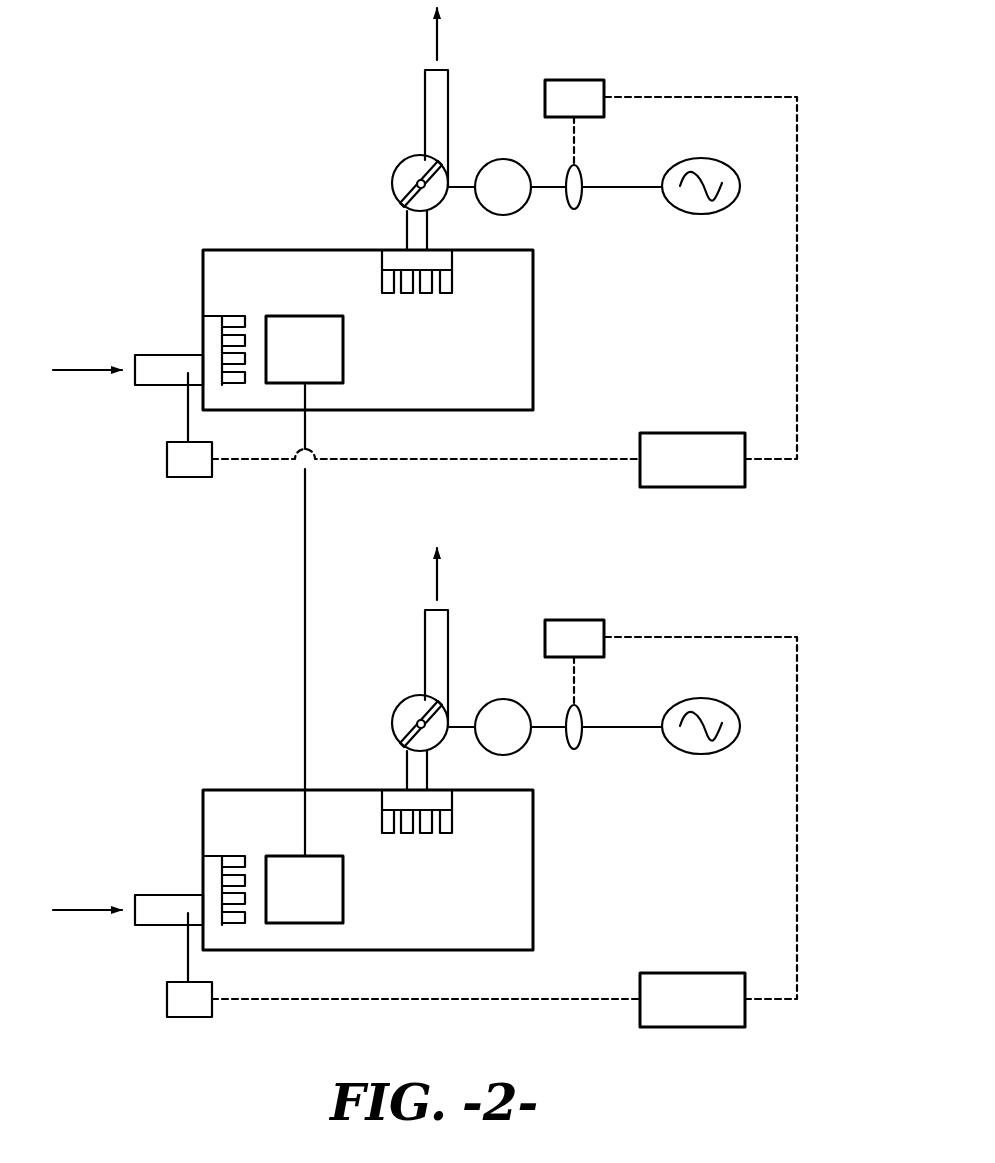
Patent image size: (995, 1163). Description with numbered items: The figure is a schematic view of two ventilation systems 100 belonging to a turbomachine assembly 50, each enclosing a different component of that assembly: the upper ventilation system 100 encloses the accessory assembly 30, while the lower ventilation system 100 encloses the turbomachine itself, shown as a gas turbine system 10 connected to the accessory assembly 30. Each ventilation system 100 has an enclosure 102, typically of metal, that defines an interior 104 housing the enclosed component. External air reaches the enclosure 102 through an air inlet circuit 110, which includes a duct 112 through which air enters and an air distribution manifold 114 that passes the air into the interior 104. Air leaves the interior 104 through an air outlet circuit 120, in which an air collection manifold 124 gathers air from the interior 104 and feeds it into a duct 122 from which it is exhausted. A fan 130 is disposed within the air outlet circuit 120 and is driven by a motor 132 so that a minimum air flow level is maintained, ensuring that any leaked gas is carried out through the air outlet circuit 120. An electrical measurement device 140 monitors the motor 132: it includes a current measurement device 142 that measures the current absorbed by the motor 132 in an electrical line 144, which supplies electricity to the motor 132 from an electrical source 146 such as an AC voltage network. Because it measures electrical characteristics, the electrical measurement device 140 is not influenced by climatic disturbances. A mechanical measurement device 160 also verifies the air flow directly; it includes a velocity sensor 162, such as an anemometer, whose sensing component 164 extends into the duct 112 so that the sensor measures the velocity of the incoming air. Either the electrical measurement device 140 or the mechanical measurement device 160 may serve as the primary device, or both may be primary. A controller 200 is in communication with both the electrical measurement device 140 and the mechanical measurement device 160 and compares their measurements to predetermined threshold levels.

The ventilation system 100 is at (212, 116).
The enclosure 102 is at (533, 357).
The interior 104 is at (276, 296).
The accessory assembly 30 is at (319, 364).
The gas turbine system 10 is at (319, 904).
The turbomachine assembly 50 is at (356, 362).
The air inlet circuit 110 is at (140, 338).
The duct 112 is at (161, 372).
The air distribution manifold 114 is at (213, 328).
The air outlet circuit 120 is at (385, 240).
The duct 122 is at (425, 95).
The air collection manifold 124 is at (453, 265).
The fan 130 is at (392, 183).
The motor 132 is at (495, 159).
The electrical measurement device 140 is at (566, 65).
The current measurement device 142 is at (595, 80).
The electrical line 144 is at (612, 187).
The electrical source 146 is at (705, 158).
The mechanical measurement device 160 is at (155, 460).
The velocity sensor 162 is at (196, 478).
The sensing component 164 is at (178, 412).
The controller 200 is at (716, 480).